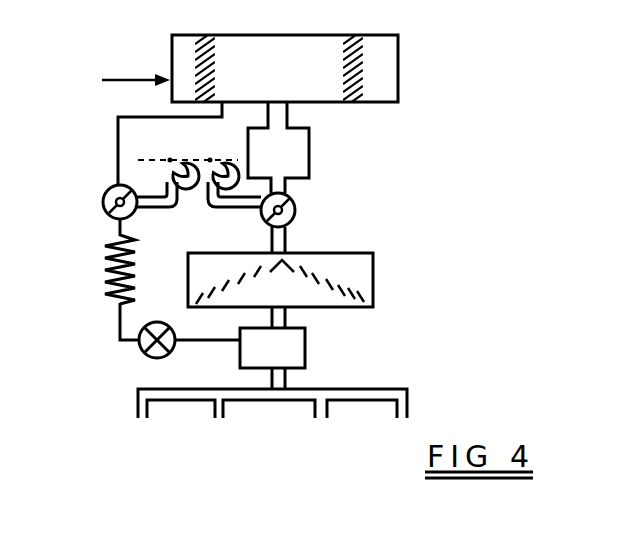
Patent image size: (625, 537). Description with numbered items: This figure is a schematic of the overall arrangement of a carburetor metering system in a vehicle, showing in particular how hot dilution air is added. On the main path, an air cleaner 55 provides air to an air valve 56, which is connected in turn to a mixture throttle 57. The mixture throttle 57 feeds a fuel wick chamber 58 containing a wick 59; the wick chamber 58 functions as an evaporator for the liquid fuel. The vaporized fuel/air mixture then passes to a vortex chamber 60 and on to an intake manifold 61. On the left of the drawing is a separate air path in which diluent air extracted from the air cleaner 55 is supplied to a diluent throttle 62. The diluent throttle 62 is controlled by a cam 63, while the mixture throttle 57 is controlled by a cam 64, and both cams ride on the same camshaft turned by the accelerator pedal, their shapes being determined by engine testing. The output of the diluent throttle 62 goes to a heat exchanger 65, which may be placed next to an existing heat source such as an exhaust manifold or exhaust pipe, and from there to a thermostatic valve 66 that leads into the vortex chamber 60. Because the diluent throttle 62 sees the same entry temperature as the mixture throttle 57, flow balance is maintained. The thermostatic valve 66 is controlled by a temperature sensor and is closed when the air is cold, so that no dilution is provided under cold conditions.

The air cleaner 55 is at (398, 73).
The air valve 56 is at (309, 160).
The mixture throttle 57 is at (296, 213).
The fuel wick chamber 58 is at (373, 285).
The wick 59 is at (340, 292).
The vortex chamber 60 is at (305, 338).
The intake manifold 61 is at (407, 404).
The diluent throttle 62 is at (104, 197).
The cam 63 is at (161, 151).
The cam 64 is at (216, 150).
The heat exchanger 65 is at (106, 277).
The thermostatic valve 66 is at (146, 352).